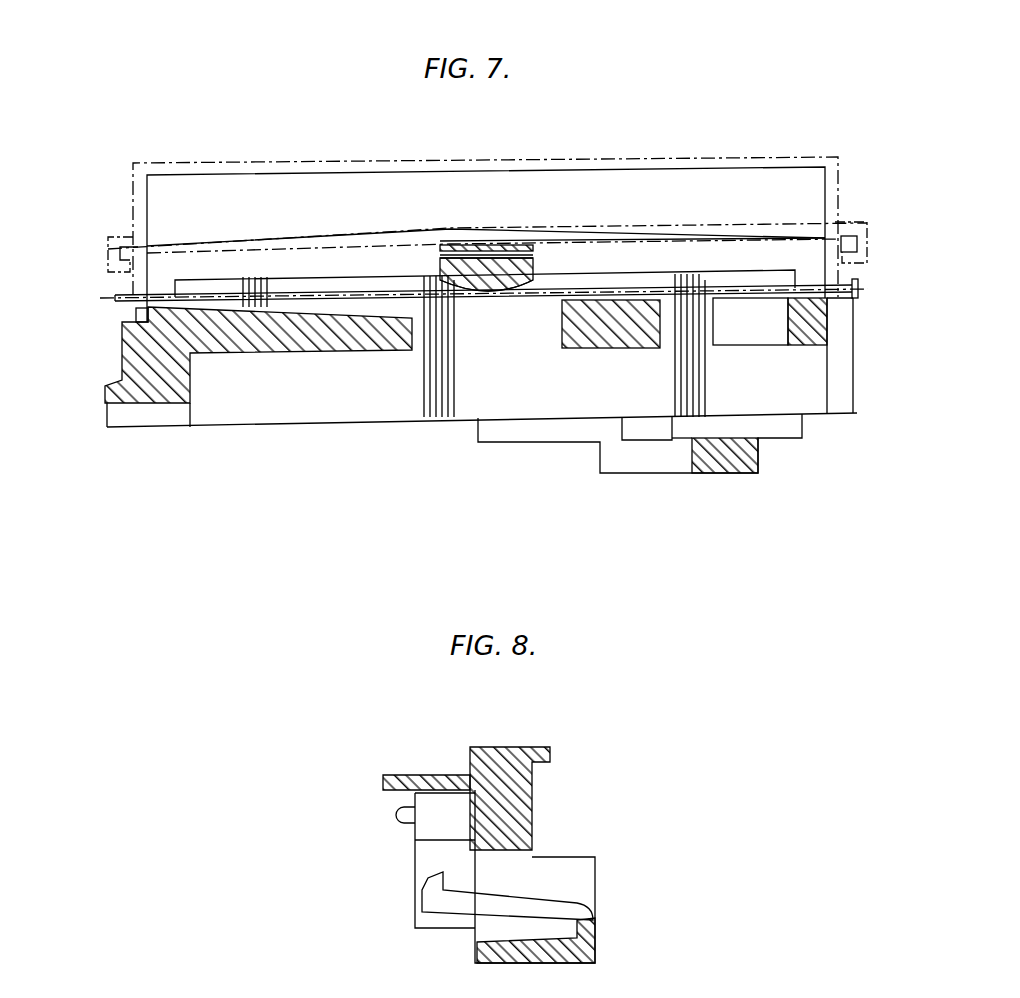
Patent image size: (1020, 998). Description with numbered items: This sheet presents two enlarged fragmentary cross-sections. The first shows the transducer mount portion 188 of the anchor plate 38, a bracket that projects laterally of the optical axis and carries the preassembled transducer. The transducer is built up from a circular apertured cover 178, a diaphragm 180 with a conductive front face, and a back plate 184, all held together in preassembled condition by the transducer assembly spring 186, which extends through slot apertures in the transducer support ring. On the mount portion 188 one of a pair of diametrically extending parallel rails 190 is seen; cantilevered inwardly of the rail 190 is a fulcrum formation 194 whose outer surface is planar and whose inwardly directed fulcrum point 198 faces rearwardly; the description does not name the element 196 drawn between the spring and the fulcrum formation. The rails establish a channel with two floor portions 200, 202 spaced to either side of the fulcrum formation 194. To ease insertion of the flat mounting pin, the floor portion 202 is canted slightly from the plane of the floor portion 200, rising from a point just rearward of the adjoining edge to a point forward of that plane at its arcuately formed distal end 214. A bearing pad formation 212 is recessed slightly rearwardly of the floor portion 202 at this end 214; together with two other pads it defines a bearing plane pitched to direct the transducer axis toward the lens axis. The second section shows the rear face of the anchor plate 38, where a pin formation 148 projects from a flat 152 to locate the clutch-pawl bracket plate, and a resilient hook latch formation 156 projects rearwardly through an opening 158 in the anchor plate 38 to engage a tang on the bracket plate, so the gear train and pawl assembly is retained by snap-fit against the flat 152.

In FIG. 7, the circular apertured cover 178 is at (630, 162).
In FIG. 7, the diaphragm 180 is at (233, 243).
In FIG. 7, the back plate 184 is at (620, 240).
In FIG. 7, the transducer assembly spring 186 is at (530, 248).
In FIG. 7, the transducer mount portion 188 is at (822, 420).
In FIG. 7, the rail 190 is at (718, 280).
In FIG. 7, the fulcrum formation 194 is at (437, 262).
In FIG. 7, the lens element 196 is at (488, 255).
In FIG. 7, the fulcrum point 198 is at (487, 292).
In FIG. 7, the floor portion 200 is at (620, 298).
In FIG. 7, the floor portion 202 is at (347, 300).
In FIG. 7, the bearing pad formation 212 is at (123, 320).
In FIG. 7, the distal end of floor portion 214 is at (132, 314).
In FIG. 8, the anchor plate 38 is at (565, 740).
In FIG. 8, the pin formation 148 is at (396, 815).
In FIG. 8, the flat 152 is at (415, 838).
In FIG. 8, the resilient hook latch formation 156 is at (445, 903).
In FIG. 8, the opening 158 is at (532, 880).